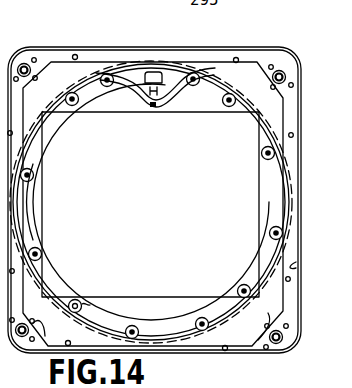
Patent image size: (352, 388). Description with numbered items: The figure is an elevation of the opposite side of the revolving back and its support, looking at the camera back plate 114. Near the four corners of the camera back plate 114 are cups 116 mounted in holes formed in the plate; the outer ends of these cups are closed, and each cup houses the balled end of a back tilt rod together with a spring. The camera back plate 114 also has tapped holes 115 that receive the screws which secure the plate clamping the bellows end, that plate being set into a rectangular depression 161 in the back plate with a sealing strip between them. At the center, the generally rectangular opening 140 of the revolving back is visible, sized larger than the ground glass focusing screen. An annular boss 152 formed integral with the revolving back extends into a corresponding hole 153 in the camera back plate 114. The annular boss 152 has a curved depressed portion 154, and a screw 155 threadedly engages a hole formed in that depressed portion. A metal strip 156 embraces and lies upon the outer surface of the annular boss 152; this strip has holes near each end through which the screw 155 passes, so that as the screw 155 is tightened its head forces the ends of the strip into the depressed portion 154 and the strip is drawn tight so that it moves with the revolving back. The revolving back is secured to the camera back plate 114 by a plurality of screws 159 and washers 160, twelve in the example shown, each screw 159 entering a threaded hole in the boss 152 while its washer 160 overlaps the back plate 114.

The camera back plate 114 is at (291, 301).
The tapped holes 115 is at (66, 345).
The cups 116 is at (22, 64).
The opening 140 is at (258, 207).
The annular boss 152 is at (22, 210).
The hole 153 is at (300, 132).
The depressed portion 154 is at (167, 93).
The screw 155 is at (180, 75).
The metal strip 156 is at (148, 72).
The screws 159 is at (81, 301).
The washers 160 is at (90, 305).
The rectangular depression 161 is at (296, 262).